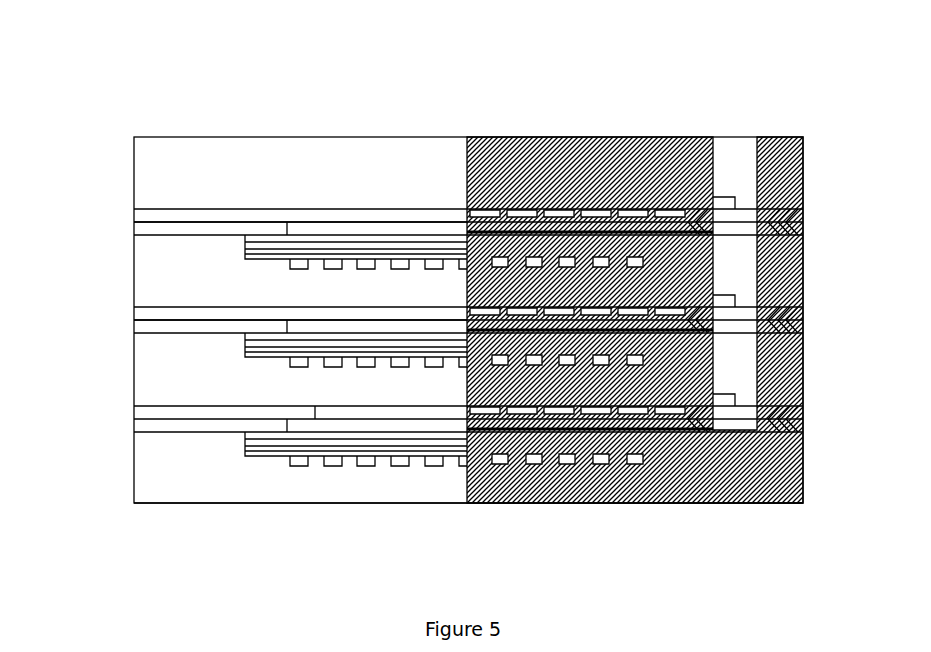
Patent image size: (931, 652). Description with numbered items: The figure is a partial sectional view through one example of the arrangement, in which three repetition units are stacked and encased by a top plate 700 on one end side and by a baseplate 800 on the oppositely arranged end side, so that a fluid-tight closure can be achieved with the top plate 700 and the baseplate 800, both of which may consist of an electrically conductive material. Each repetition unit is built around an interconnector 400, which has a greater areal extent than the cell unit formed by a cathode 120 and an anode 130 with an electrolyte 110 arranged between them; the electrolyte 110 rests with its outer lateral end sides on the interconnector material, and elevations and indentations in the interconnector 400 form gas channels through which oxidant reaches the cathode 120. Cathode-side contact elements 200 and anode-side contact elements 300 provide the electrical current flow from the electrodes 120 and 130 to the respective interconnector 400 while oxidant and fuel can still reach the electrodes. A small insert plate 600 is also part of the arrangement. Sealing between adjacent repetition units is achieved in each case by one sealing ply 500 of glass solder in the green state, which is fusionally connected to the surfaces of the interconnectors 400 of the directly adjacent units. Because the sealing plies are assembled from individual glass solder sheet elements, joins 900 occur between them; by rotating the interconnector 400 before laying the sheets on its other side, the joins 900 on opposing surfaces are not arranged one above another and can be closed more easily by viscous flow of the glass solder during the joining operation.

The top plate 700 is at (240, 177).
The baseplate 800 is at (222, 483).
The interconnector 400 is at (800, 297).
The sealing ply of glass solder in the green state 500 is at (162, 228).
The joins 900 is at (316, 316).
The cathode 120 is at (478, 400).
The electrolyte 110 is at (528, 400).
The anode 130 is at (566, 400).
The anode/gas side contact element 300 is at (608, 400).
The cathode/air side contact element 200 is at (645, 360).
The small insert plate 600 is at (705, 340).